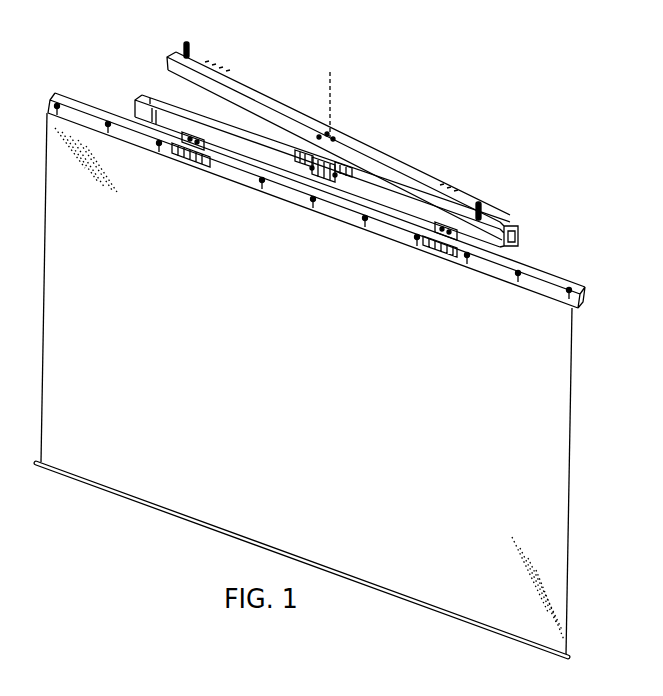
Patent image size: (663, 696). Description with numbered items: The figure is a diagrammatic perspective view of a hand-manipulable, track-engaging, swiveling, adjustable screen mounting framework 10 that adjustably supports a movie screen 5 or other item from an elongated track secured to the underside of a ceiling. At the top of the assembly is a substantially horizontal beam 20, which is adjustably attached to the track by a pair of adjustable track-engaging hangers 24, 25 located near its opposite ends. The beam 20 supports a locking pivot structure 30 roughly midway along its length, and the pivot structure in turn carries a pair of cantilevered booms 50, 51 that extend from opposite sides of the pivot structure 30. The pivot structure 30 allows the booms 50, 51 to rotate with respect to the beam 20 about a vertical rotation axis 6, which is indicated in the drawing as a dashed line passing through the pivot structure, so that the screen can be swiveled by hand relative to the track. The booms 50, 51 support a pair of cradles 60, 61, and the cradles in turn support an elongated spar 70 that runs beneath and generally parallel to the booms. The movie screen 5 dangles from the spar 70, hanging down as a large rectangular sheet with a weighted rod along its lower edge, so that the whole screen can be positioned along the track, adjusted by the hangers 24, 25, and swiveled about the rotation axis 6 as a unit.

The movie screen 5 is at (308, 379).
The rotation axis 6 is at (337, 96).
The screen mounting framework 10 is at (497, 135).
The beam 20 is at (250, 94).
The track-engaging hanger 24 is at (184, 46).
The track-engaging hanger 25 is at (477, 201).
The locking pivot structure 30 is at (322, 154).
The cantilevered boom 50 is at (146, 94).
The cantilevered boom 51 is at (501, 224).
The cradle 60 is at (189, 165).
The cradle 61 is at (438, 254).
The spar 70 is at (544, 268).